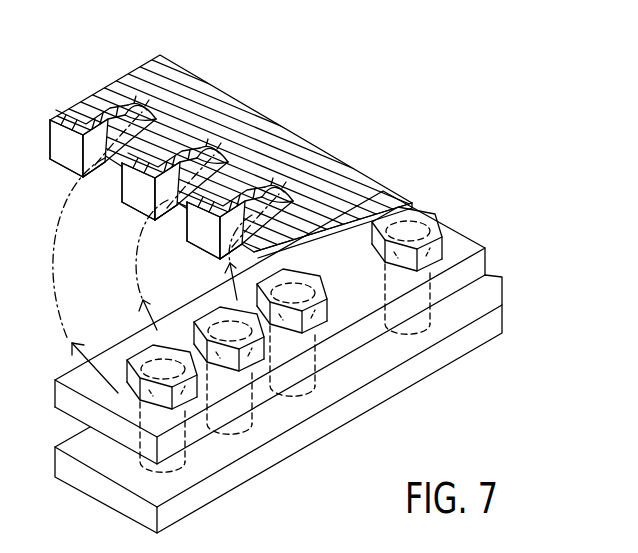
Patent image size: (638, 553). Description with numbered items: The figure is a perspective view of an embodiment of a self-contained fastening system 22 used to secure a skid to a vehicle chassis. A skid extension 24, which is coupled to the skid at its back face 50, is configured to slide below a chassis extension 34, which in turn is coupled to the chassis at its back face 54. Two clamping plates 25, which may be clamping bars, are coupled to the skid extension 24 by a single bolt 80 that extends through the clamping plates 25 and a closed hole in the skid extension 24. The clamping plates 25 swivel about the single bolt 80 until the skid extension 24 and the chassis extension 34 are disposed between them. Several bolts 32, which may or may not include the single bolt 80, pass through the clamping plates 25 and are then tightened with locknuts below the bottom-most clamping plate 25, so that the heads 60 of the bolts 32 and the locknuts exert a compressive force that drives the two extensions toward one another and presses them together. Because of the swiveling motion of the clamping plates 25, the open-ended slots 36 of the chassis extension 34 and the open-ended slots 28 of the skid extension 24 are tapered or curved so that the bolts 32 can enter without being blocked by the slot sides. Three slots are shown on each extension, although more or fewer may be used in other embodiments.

The fastening system 22 is at (488, 142).
The skid extension 24 is at (455, 296).
The clamping plates 25 is at (343, 347).
The open-ended slots 28 is at (122, 203).
The bolts 32 is at (230, 365).
The chassis extension 34 is at (338, 181).
The open-ended slots 36 is at (268, 190).
The back face 50 is at (497, 273).
The back face 54 is at (190, 78).
The heads 60 is at (147, 363).
The single bolt 80 is at (410, 213).